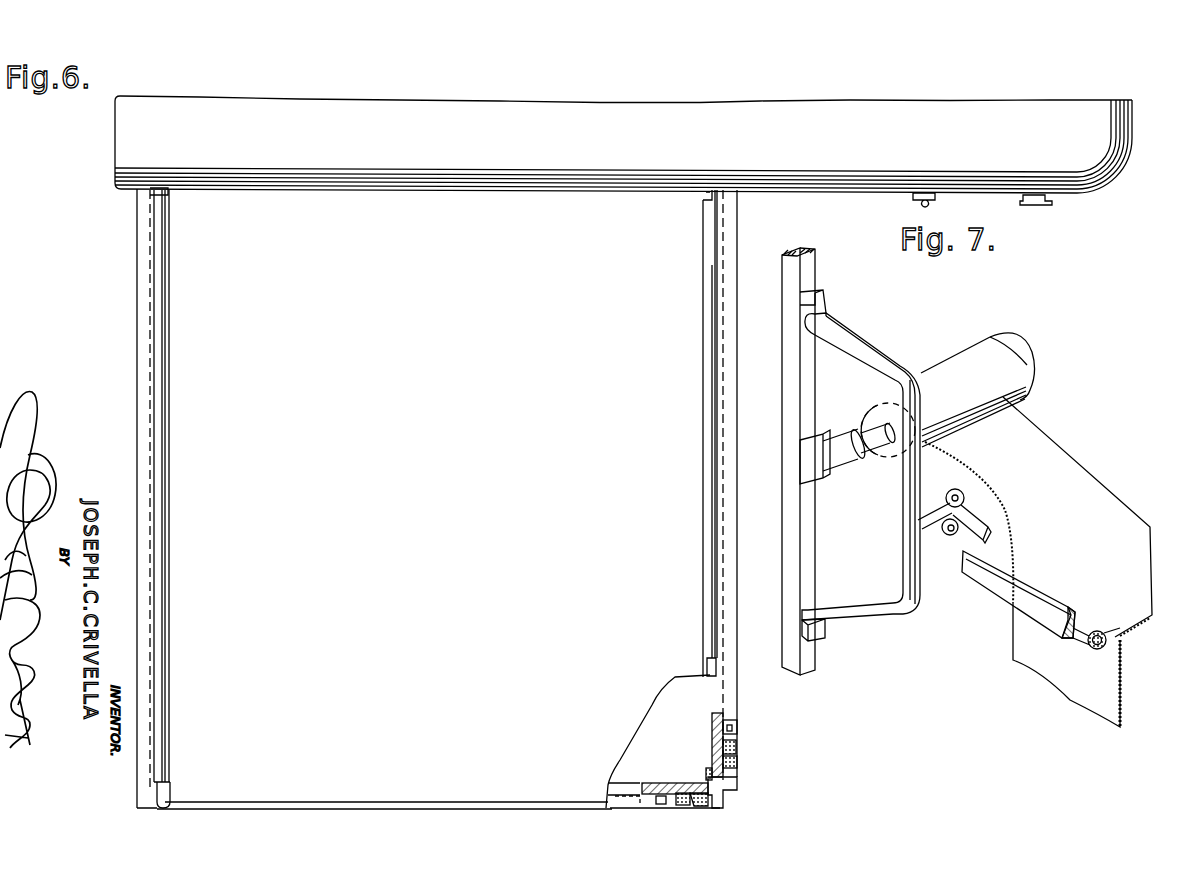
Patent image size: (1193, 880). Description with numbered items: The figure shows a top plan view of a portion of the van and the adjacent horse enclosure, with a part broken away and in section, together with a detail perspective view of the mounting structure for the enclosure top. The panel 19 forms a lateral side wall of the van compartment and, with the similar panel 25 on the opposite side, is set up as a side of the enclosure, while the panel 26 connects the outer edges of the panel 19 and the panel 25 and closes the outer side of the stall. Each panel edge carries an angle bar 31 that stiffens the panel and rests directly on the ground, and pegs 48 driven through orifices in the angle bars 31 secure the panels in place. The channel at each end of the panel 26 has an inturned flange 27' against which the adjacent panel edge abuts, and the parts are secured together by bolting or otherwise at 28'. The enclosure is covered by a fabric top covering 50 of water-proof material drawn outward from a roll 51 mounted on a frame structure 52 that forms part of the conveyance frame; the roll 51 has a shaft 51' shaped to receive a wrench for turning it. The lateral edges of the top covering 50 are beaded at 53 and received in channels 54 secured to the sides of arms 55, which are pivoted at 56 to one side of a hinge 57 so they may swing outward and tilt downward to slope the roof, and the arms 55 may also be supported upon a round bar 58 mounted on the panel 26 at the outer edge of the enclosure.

In FIG. 6, the panel 19 is at (724, 724).
In FIG. 6, the panel 25 is at (150, 478).
In FIG. 6, the panel 26 is at (664, 783).
In FIG. 6, the inturned flange 27' is at (694, 741).
In FIG. 6, the bolting 28' is at (752, 787).
In FIG. 6, the angle bar 31 is at (737, 744).
In FIG. 6, the peg 48 is at (738, 731).
In FIG. 6, the top covering 50 is at (623, 200).
In FIG. 7, the top covering 50 is at (1050, 468).
In FIG. 7, the roll 51 is at (871, 422).
In FIG. 7, the shaft 51' is at (848, 477).
In FIG. 7, the frame structure 52 is at (883, 612).
In FIG. 6, the bead 53 is at (172, 791).
In FIG. 7, the bead 53 is at (1103, 634).
In FIG. 6, the channel 54 is at (163, 405).
In FIG. 7, the channel 54 is at (1100, 646).
In FIG. 6, the arm 55 is at (137, 398).
In FIG. 7, the arm 55 is at (1003, 593).
In FIG. 7, the pivot 56 is at (952, 536).
In FIG. 7, the hinge 57 is at (933, 512).
In FIG. 6, the round bar 58 is at (617, 785).